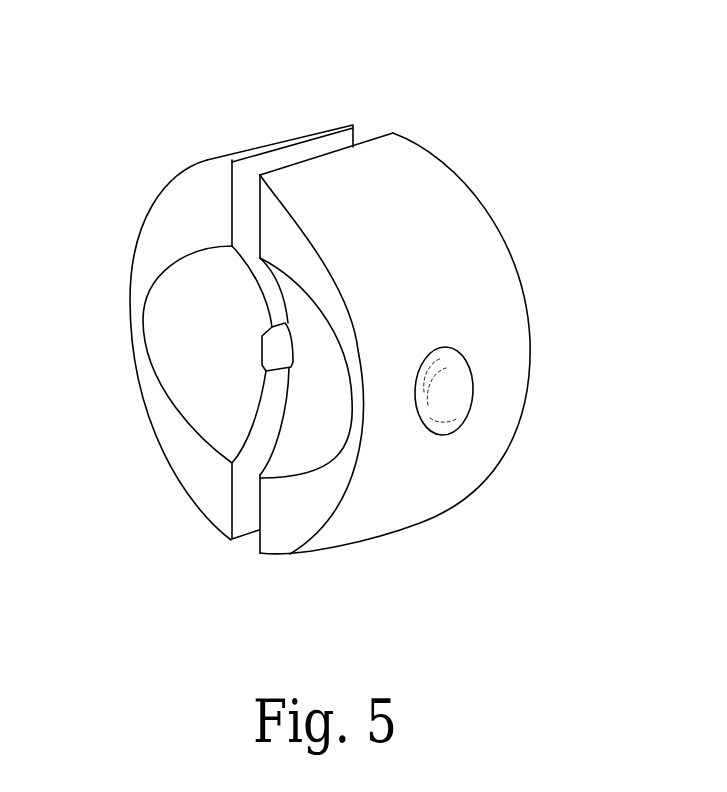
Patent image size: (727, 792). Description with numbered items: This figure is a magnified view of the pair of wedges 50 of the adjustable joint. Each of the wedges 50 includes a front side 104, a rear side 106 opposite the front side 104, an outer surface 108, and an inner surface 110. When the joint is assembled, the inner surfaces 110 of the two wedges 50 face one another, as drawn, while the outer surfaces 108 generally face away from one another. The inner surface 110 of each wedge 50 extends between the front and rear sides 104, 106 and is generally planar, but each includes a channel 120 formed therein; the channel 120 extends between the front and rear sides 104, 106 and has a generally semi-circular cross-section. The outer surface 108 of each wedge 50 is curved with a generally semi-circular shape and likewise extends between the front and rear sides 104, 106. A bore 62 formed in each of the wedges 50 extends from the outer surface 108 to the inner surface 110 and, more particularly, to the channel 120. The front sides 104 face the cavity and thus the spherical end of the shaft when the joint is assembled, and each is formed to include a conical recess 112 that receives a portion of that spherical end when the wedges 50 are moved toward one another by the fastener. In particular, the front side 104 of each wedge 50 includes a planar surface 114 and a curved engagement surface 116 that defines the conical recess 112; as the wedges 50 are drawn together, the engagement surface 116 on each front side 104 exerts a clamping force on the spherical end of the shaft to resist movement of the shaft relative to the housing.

The wedges 50 is at (433, 92).
The bore 62 is at (458, 398).
The front side 104 is at (140, 193).
The rear side 106 is at (367, 132).
The outer surface 108 is at (132, 340).
The inner surface 110 is at (248, 195).
The conical recess 112 is at (222, 405).
The planar surface 114 is at (147, 248).
The curved engagement surface 116 is at (175, 380).
The channel 120 is at (271, 352).